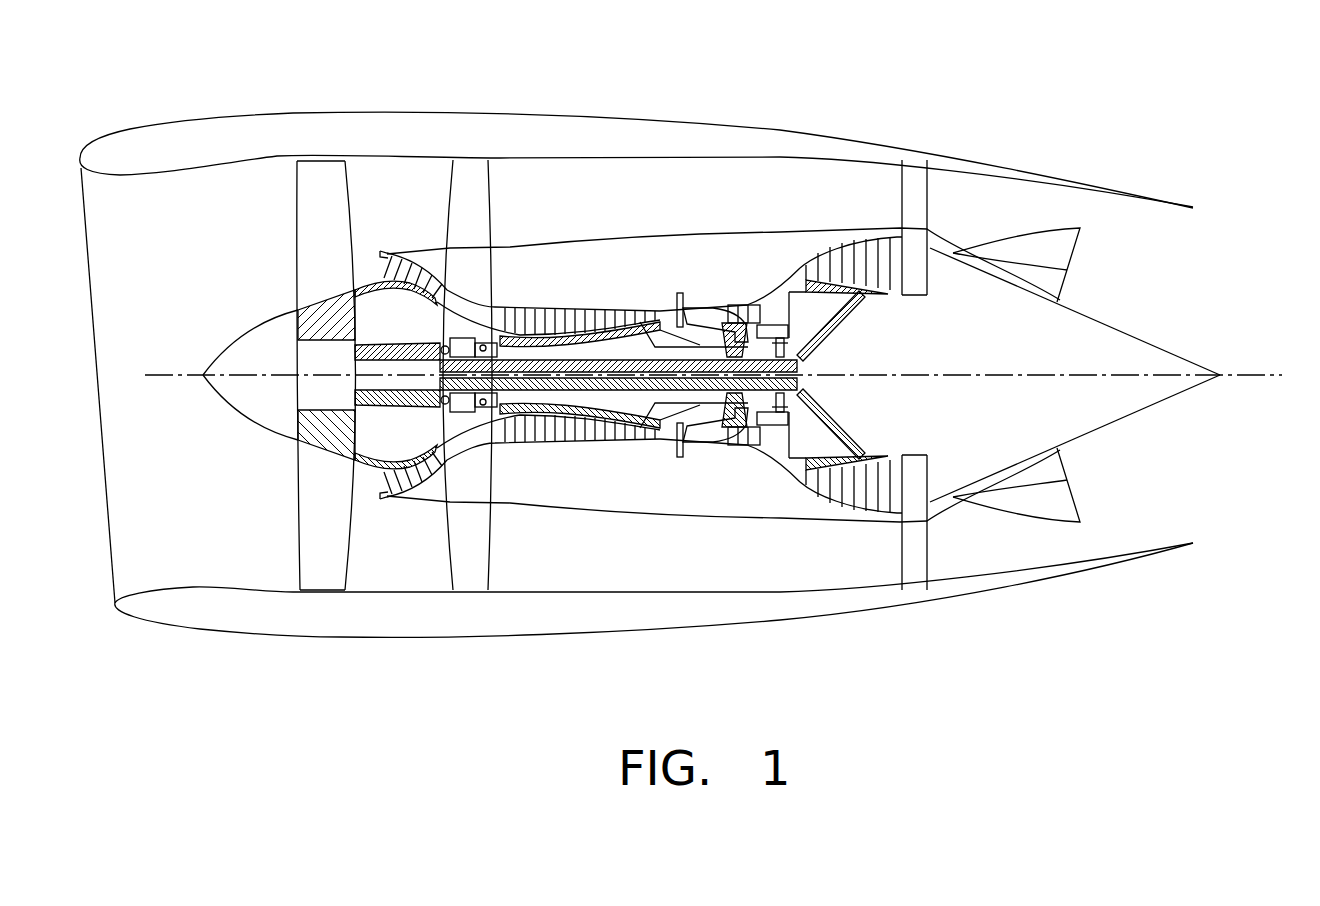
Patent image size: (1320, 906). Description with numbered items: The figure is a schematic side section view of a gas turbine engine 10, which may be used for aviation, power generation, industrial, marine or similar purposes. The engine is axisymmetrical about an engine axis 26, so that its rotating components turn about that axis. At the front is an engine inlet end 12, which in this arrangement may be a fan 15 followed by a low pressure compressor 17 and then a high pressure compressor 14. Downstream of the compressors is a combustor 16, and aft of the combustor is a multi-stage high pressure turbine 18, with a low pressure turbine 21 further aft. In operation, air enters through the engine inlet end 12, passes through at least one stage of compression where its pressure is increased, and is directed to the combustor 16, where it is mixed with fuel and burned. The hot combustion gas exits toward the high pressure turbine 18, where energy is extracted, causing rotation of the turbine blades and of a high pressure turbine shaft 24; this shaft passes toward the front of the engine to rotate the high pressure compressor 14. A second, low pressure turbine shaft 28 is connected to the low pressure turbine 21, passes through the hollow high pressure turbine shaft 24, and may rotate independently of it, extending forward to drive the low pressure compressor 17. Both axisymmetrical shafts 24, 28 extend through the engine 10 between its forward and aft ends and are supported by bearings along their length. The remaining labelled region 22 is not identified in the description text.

The gas turbine engine 10 is at (943, 98).
The engine inlet end 12 is at (150, 296).
The high pressure compressor 14 is at (537, 303).
The fan 15 is at (287, 523).
The combustor 16 is at (700, 297).
The low pressure compressor 17 is at (403, 240).
The multi-stage high pressure turbine 18 is at (755, 283).
The low pressure turbine 21 is at (838, 518).
The exhaust nozzle 22 is at (805, 308).
The high pressure turbine shaft 24 is at (677, 440).
The engine axis 26 is at (1282, 375).
The low pressure turbine shaft 28 is at (597, 373).